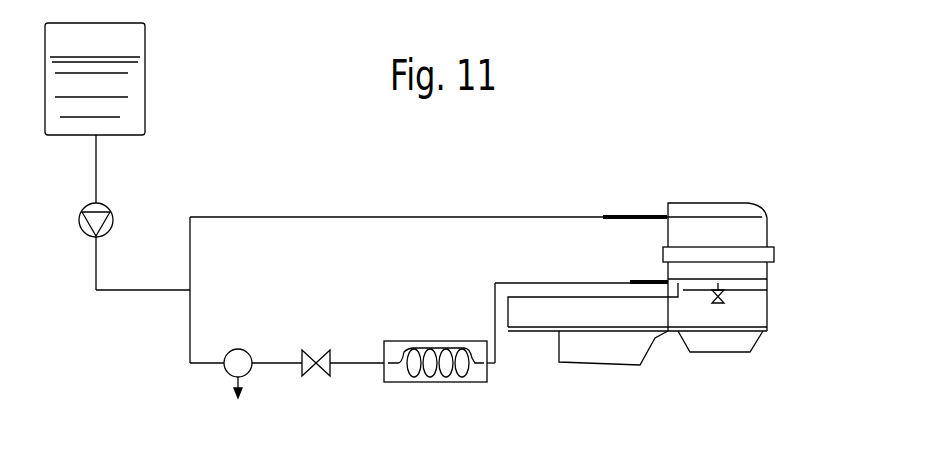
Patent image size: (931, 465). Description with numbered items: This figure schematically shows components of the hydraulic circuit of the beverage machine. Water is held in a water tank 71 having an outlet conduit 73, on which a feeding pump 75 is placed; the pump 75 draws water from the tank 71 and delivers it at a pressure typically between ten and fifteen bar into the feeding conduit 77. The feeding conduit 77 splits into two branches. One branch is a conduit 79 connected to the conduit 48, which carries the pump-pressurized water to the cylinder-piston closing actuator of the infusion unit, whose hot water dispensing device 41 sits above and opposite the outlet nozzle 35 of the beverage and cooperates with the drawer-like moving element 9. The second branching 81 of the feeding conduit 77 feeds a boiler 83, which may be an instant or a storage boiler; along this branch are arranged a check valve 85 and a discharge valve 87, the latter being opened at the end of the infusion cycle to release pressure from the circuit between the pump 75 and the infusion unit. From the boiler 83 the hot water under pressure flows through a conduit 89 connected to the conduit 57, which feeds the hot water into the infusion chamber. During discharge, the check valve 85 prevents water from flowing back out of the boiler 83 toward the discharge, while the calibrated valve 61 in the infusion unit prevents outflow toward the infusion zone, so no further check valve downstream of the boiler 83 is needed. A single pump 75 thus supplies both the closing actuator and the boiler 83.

The water tank 71 is at (148, 96).
The outlet conduit 73 is at (99, 179).
The feeding pump 75 is at (115, 218).
The feeding conduit 77 is at (156, 296).
The second branching of conduit 81 is at (187, 334).
The conduit 79 is at (386, 216).
The conduit 48 is at (633, 213).
The discharge valve 87 is at (237, 348).
The check valve 85 is at (309, 349).
The boiler 83 is at (432, 383).
The conduit 89 is at (493, 303).
The conduit 57 is at (650, 279).
The moving element 9 is at (678, 312).
The outlet nozzle 35 is at (608, 352).
The hot water dispensing device 41 is at (777, 231).
The calibrated valve 61 is at (738, 297).